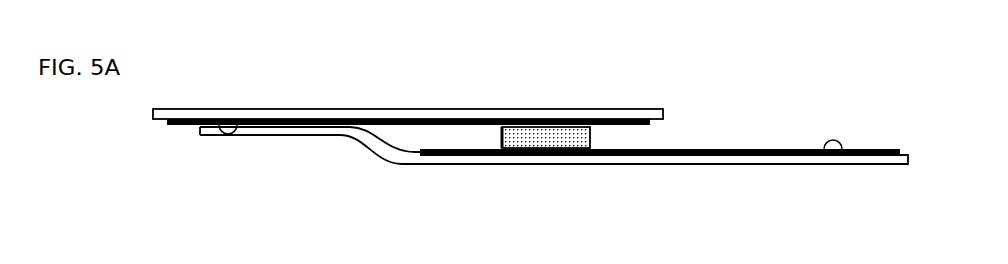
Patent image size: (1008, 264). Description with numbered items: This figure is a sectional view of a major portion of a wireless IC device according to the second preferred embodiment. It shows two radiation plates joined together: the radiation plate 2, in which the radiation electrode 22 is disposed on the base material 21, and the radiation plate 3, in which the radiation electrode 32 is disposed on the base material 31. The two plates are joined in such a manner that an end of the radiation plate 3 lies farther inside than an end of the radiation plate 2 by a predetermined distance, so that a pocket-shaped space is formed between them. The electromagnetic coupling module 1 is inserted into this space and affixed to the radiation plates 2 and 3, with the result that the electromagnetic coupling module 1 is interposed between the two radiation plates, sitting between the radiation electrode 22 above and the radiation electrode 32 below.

The electromagnetic coupling module 1 is at (592, 148).
The radiation plate 2 is at (182, 42).
The base material 21 is at (193, 108).
The radiation electrode 22 is at (237, 126).
The radiation plate 3 is at (777, 230).
The base material 31 is at (802, 165).
The radiation electrode 32 is at (840, 156).